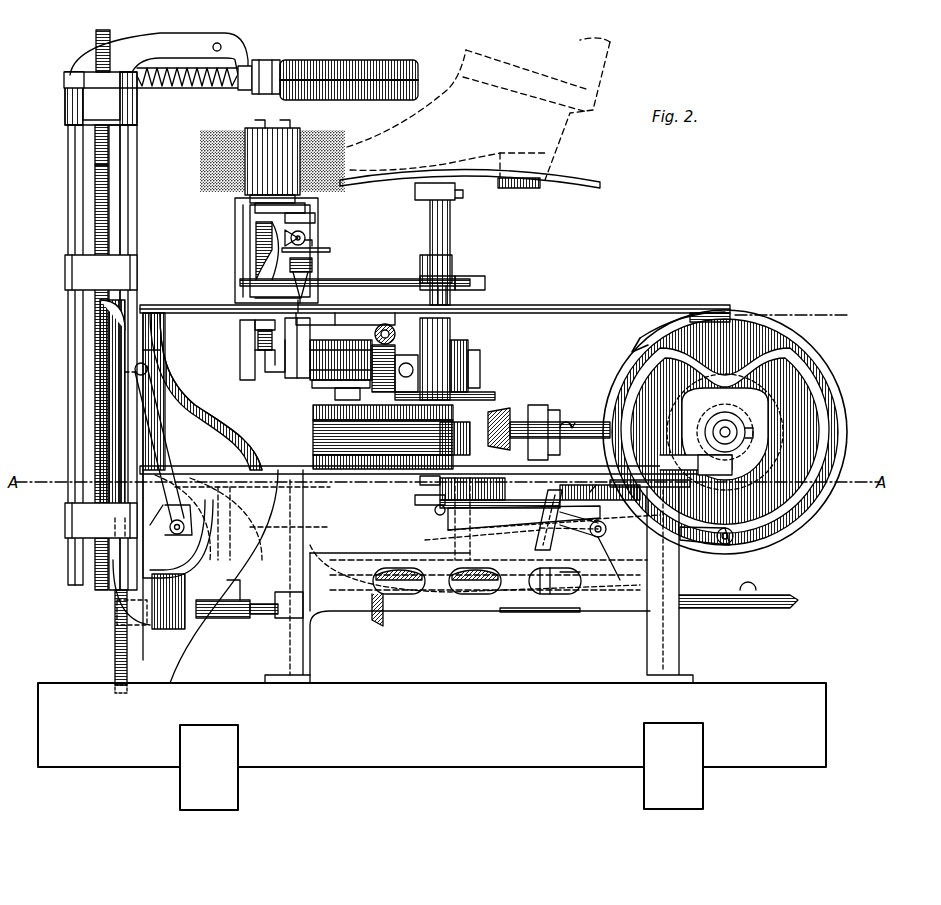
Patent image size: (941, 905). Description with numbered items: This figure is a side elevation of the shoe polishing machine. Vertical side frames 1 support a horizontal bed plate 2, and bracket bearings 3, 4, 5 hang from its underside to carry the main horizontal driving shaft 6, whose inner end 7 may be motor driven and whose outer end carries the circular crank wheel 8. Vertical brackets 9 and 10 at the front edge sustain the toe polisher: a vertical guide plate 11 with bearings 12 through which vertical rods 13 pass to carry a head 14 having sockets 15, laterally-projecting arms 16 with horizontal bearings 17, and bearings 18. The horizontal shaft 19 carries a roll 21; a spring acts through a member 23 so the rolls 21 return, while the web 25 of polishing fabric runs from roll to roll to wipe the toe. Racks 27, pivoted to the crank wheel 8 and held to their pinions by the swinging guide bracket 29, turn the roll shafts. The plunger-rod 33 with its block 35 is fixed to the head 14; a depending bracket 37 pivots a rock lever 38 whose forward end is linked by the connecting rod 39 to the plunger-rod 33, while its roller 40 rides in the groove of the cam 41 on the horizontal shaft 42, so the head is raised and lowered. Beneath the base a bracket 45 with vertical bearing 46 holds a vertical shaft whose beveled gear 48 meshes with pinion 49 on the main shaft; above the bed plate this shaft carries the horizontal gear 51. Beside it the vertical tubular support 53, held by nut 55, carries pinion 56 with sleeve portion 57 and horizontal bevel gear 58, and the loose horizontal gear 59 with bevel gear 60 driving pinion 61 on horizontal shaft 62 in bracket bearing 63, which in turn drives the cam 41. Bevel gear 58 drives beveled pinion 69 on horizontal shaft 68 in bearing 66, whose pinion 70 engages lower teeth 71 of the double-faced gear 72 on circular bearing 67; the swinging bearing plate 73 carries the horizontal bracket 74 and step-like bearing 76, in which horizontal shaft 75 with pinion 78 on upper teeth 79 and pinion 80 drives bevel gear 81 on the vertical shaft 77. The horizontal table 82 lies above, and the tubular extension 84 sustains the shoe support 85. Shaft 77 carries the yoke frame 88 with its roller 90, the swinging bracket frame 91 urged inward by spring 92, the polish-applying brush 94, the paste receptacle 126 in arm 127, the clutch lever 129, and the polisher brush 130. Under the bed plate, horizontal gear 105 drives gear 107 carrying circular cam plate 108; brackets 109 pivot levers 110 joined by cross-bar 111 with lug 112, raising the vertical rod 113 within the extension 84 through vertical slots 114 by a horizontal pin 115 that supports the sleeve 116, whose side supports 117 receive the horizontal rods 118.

The vertical side frames 1 is at (297, 626).
The bed plate 2 is at (210, 476).
The bracket bearing 3 is at (143, 350).
The bracket bearing 4 is at (278, 618).
The bracket bearing 5 is at (555, 613).
The main horizontal driving shaft 6 is at (256, 616).
The inner end of driving shaft 7 is at (778, 606).
The circular crank wheel 8 is at (114, 668).
The vertical bracket 9 is at (208, 517).
The vertical bracket 10 is at (240, 428).
The vertical guide plate 11 is at (115, 413).
The vertically-disposed bearings 12 is at (68, 278).
The vertical rods 13 is at (68, 180).
The head 14 is at (90, 98).
The sockets 15 is at (66, 118).
The laterally-projecting arm 16 is at (159, 60).
The horizontal bearings 17 is at (246, 70).
The horizontal bearings 18 is at (66, 78).
The horizontal shaft 19 is at (97, 80).
The rolls 21 is at (274, 70).
The member 23 is at (198, 90).
The web 25 is at (352, 72).
The racks 27 is at (96, 212).
The swinging guide bracket 29 is at (95, 148).
The plunger-rod 33 is at (119, 232).
The block 35 is at (130, 372).
The depending bracket 37 is at (533, 552).
The rock lever 38 is at (326, 562).
The link or connecting rod 39 is at (162, 508).
The roller 40 is at (718, 545).
The cam 41 is at (725, 432).
The horizontal shaft 42 is at (735, 440).
The bracket 45 is at (524, 518).
The vertical bearing 46 is at (437, 512).
The beveled gear 48 is at (470, 605).
The pinion 49 is at (373, 628).
The horizontal gear 51 is at (336, 456).
The vertical tubular support 53 is at (424, 372).
The nut 55 is at (418, 500).
The pinion 56 is at (428, 476).
The sleeve portion 57 is at (432, 456).
The horizontal bevel gear 58 is at (470, 390).
The horizontal gear 59 is at (497, 410).
The bevel gear 60 is at (380, 421).
The pinion 61 is at (539, 410).
The horizontal shaft 62 is at (592, 422).
The bracket bearing 63 is at (540, 430).
The bearing 66 is at (470, 362).
The circular bearing 67 is at (345, 388).
The horizontal shaft 68 is at (400, 356).
The beveled pinion 69 is at (452, 345).
The pinion 70 is at (372, 382).
The lower teeth 71 is at (318, 366).
The double-faced gear 72 is at (290, 362).
The circular flat bearing plate 73 is at (330, 380).
The horizontal bracket 74 is at (335, 318).
The horizontal shaft 75 is at (258, 338).
The step-like bearing 76 is at (266, 356).
The vertical shaft 77 is at (256, 324).
The pinion 78 is at (380, 320).
The upper teeth 79 is at (345, 372).
The pinion 80 is at (240, 330).
The bevel gear 81 is at (256, 352).
The horizontal table 82 is at (605, 306).
The tubular extension 84 is at (451, 238).
The foot or shoe support 85 is at (508, 185).
The yoke frame 88 is at (238, 288).
The roller 90 is at (300, 312).
The swinging bracket frame 91 is at (315, 218).
The spring 92 is at (256, 232).
The polish-applying brush 94 is at (340, 182).
The horizontal gear 105 is at (492, 487).
The horizontal gear 107 is at (591, 492).
The circular cam plate 108 is at (622, 528).
The brackets 109 is at (562, 479).
The levers 110 is at (448, 516).
The cross-bar 111 is at (597, 540).
The lug or projection 112 is at (597, 538).
The vertical rod 113 is at (440, 505).
The vertical slots 114 is at (470, 305).
The horizontal pin 115 is at (445, 283).
The sleeve 116 is at (422, 262).
The tubular horizontal side supports 117 is at (484, 283).
The horizontal rods 118 is at (392, 270).
The paste receptacle 126 is at (285, 147).
The arm 127 is at (254, 212).
The lever 129 is at (312, 265).
The polisher brush 130 is at (200, 150).